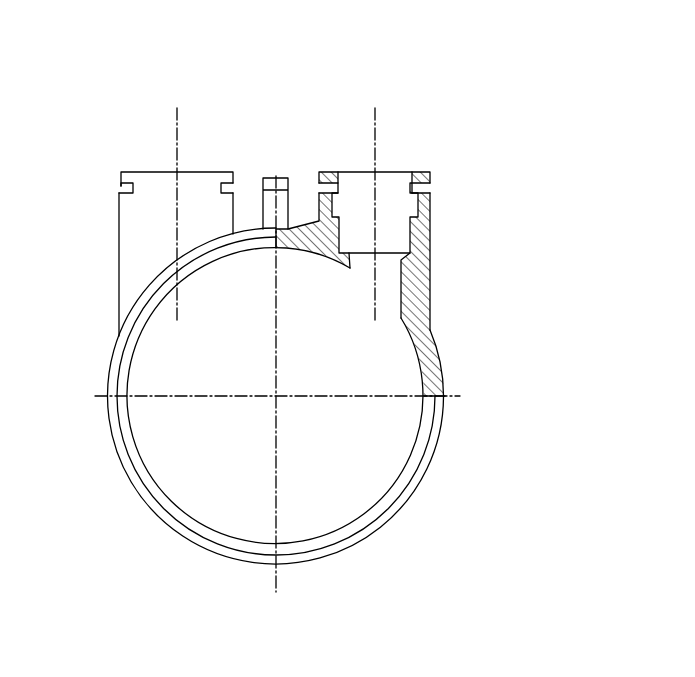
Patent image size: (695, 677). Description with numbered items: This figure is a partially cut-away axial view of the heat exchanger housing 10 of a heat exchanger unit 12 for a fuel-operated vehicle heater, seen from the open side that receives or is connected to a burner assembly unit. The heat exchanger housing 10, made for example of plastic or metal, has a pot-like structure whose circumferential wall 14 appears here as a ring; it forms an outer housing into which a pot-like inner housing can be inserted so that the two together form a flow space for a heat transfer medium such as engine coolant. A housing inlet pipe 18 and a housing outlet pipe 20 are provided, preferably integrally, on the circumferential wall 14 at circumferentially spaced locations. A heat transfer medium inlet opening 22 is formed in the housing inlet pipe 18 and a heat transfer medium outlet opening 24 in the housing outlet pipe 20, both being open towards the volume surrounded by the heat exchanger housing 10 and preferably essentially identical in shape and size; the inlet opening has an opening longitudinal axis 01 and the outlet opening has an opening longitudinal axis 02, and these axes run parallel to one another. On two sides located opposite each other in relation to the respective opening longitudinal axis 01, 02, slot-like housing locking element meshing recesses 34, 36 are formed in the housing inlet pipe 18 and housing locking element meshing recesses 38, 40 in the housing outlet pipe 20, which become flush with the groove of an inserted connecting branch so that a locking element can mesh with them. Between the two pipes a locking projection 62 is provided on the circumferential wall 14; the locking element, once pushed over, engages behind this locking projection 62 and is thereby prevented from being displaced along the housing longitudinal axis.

The heat exchanger housing 10 is at (426, 480).
The heat exchanger unit 12 is at (527, 139).
The circumferential wall 14 is at (139, 493).
The housing inlet pipe 18 is at (119, 251).
The housing outlet pipe 20 is at (431, 297).
The heat transfer medium inlet opening 22 is at (146, 160).
The heat transfer medium outlet opening 24 is at (392, 190).
The housing locking element meshing recess 34 is at (121, 190).
The housing locking element meshing recess 36 is at (232, 187).
The housing locking element meshing recess 38 is at (334, 190).
The housing locking element meshing recess 40 is at (431, 190).
The locking projection 62 is at (290, 190).
The opening longitudinal axis 01 is at (177, 130).
The opening longitudinal axis 02 is at (375, 130).